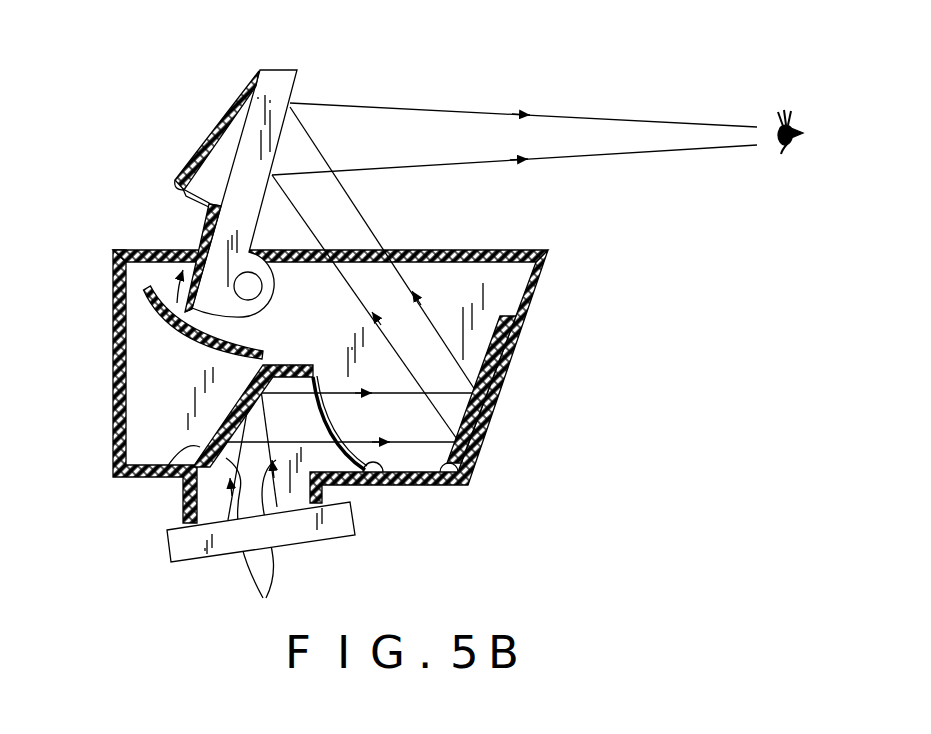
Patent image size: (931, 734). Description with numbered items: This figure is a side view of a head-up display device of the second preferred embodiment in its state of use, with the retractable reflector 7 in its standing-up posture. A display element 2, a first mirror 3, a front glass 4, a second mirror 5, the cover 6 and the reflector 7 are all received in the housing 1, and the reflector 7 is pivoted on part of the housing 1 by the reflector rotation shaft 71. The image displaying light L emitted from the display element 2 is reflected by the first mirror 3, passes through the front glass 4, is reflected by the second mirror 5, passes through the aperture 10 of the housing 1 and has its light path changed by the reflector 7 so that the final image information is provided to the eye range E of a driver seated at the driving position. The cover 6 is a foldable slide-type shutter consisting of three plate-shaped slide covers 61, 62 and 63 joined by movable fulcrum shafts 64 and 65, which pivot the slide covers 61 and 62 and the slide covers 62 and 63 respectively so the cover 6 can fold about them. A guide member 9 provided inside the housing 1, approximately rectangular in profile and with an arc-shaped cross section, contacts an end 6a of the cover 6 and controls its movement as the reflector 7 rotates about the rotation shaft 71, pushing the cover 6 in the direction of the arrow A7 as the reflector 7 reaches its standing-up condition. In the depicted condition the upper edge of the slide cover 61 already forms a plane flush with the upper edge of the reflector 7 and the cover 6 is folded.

The housing 1 is at (113, 370).
The display element 2 is at (180, 540).
The first mirror 3 is at (177, 465).
The front glass 4 is at (386, 483).
The second mirror 5 is at (440, 487).
The cover 6 is at (198, 221).
The end of the cover 6a is at (184, 322).
The reflector 7 is at (265, 180).
The guide member 9 is at (153, 315).
The aperture 10 is at (430, 258).
The slide cover 61 is at (203, 143).
The slide cover 62 is at (205, 200).
The slide cover 63 is at (200, 245).
The movable fulcrum shaft 64 is at (180, 185).
The movable fulcrum shaft 65 is at (227, 205).
The reflector rotation shaft 71 is at (262, 293).
The arrow A7 is at (175, 290).
The image displaying light L is at (252, 497).
The eye range E is at (790, 152).